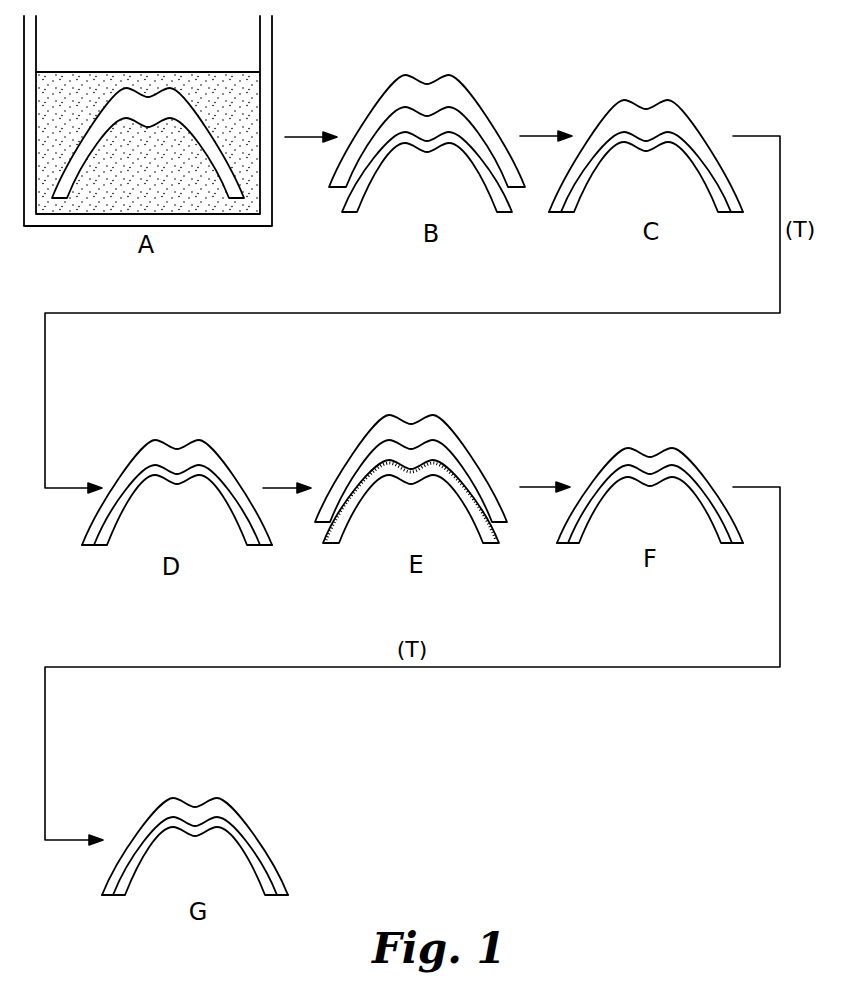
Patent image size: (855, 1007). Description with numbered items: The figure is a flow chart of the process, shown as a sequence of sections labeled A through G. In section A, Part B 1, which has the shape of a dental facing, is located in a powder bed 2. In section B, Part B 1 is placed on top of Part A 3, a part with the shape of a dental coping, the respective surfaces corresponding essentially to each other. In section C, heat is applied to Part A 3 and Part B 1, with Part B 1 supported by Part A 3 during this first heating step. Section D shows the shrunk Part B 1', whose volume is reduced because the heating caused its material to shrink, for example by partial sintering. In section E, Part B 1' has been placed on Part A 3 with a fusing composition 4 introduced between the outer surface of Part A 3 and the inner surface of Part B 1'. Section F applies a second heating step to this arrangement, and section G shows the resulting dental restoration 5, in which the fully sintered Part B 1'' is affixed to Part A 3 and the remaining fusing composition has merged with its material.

The Part B 1 is at (397, 118).
The powder bed 2 is at (68, 82).
The Part A 3 is at (422, 145).
The Part B (shrunk) 1' is at (294, 455).
The fusing composition 4 is at (443, 461).
The Part B (fully sintered) 1'' is at (422, 644).
The dental restoration 5 is at (272, 793).